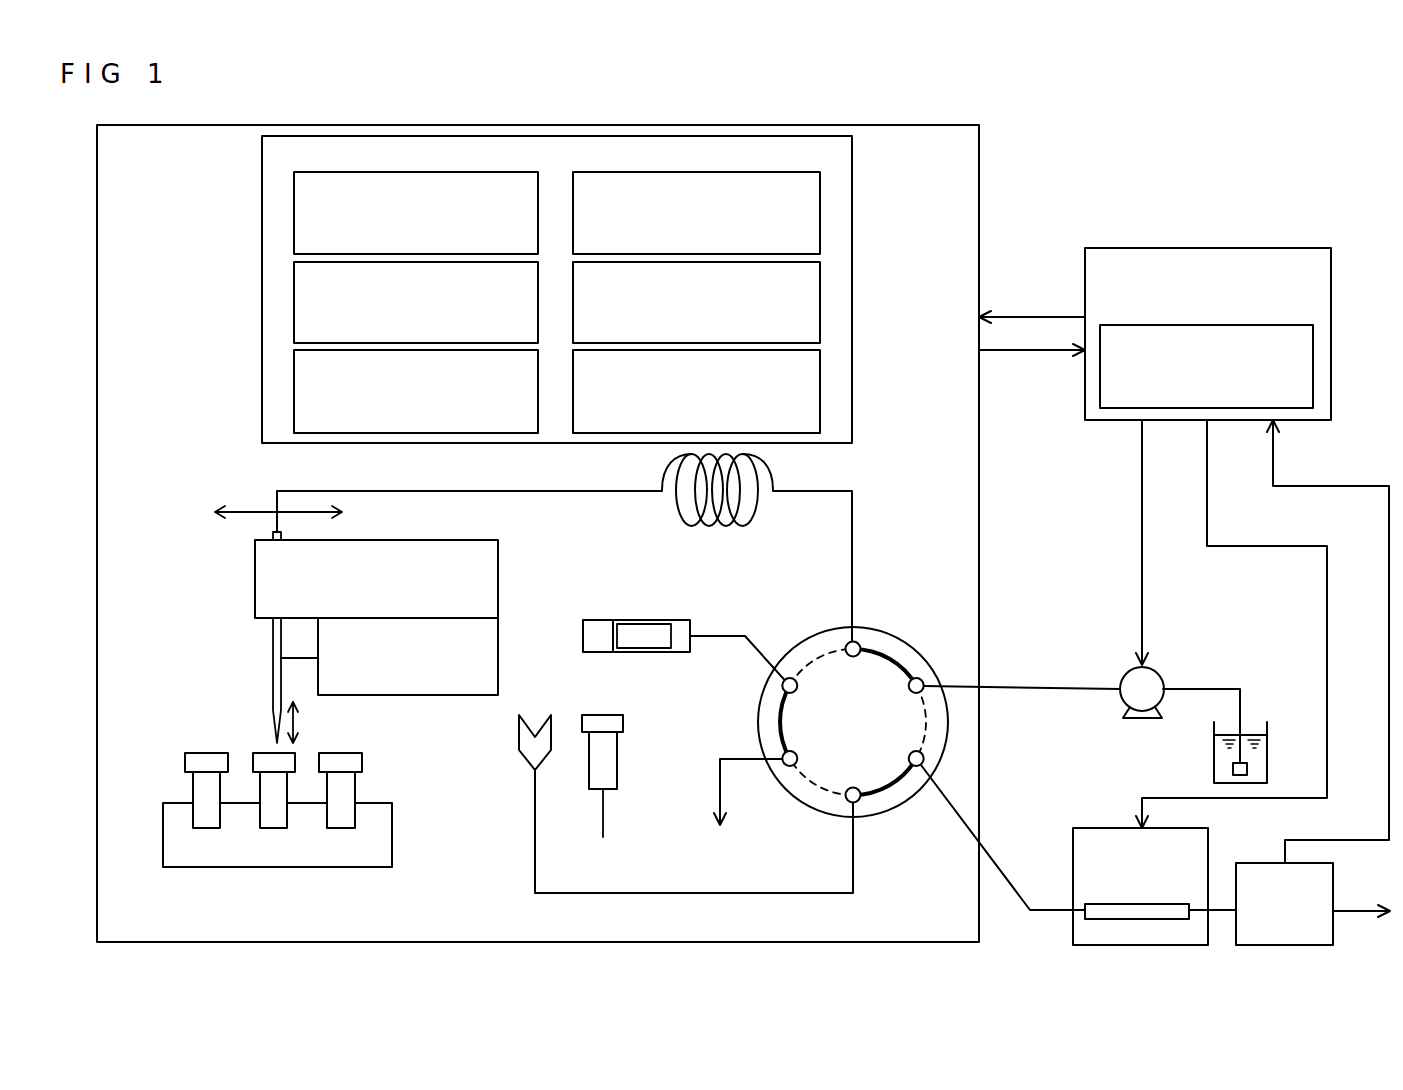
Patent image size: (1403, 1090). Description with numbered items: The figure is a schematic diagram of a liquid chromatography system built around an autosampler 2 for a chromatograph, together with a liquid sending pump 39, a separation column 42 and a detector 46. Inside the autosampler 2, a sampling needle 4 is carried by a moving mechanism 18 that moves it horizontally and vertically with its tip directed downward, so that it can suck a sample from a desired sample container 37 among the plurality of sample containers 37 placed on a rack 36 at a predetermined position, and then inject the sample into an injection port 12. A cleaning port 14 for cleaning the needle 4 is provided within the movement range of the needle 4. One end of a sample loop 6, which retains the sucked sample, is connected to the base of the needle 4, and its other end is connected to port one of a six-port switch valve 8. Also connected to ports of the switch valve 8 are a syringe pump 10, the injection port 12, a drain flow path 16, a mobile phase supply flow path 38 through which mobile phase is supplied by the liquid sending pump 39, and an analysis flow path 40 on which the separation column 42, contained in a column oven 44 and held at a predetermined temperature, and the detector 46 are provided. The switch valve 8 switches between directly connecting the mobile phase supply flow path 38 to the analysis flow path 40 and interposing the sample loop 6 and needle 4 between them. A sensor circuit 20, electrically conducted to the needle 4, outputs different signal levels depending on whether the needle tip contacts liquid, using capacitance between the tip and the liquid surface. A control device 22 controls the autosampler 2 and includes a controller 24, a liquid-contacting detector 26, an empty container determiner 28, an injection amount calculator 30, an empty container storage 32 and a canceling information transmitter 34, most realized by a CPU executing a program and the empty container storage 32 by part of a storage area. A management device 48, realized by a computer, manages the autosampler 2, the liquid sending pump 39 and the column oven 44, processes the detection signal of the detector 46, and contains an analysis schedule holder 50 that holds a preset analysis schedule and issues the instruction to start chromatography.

The autosampler 2 is at (858, 125).
The sampling needle 4 is at (273, 670).
The sample loop 6 is at (532, 491).
The switch valve 8 is at (883, 628).
The syringe pump 10 is at (648, 615).
The injection port 12 is at (543, 758).
The cleaning port 14 is at (617, 755).
The drain flow path 16 is at (720, 759).
The moving mechanism 18 is at (430, 540).
The sensor circuit 20 is at (432, 695).
The control device 22 is at (852, 167).
The controller 24 is at (294, 212).
The liquid-contacting detector 26 is at (820, 222).
The empty container determiner 28 is at (294, 297).
The injection amount calculator 30 is at (820, 300).
The empty container storage 32 is at (294, 380).
The canceling information transmitter 34 is at (820, 380).
The rack 36 is at (247, 857).
The sample container 37 is at (207, 762).
The mobile phase supply flow path 38 is at (1010, 689).
The liquid sending pump 39 is at (1155, 668).
The analysis flow path 40 is at (1010, 878).
The separation column 42 is at (1135, 908).
The column oven 44 is at (1120, 945).
The detector 46 is at (1265, 945).
The management device 48 is at (1280, 248).
The analysis schedule holder 50 is at (1313, 345).